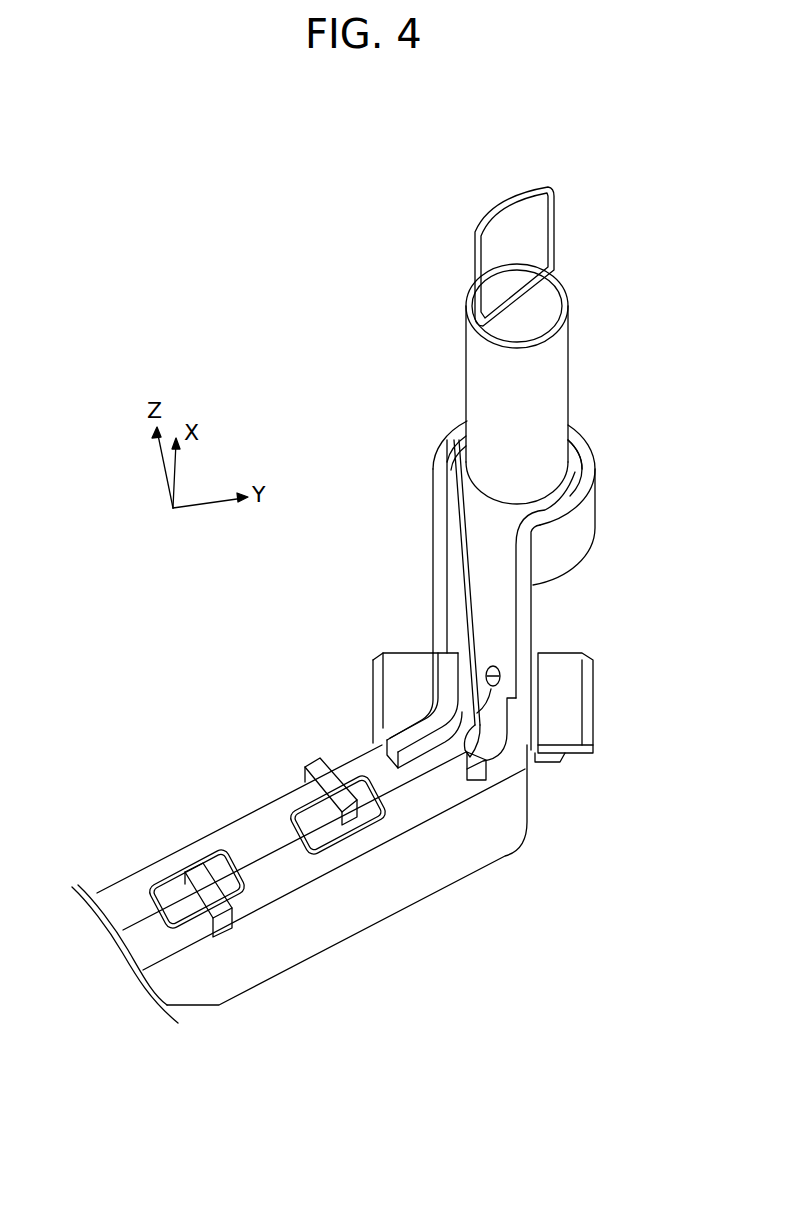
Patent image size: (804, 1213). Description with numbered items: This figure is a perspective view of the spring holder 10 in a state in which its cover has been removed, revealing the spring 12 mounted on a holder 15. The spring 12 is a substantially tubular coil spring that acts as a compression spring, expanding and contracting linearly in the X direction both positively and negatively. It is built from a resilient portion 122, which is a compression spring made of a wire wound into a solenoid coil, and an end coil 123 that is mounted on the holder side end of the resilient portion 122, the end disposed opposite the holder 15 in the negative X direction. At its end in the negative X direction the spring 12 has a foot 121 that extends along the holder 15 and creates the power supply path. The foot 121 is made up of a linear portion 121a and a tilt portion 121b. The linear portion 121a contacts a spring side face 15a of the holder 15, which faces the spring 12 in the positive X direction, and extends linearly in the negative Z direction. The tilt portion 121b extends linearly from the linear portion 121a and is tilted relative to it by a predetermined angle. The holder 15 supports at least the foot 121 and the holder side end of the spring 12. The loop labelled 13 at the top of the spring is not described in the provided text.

The spring holder 10 is at (597, 248).
The spring 12 is at (449, 300).
The loop 13 is at (507, 197).
The holder 15 is at (597, 520).
The spring side face 15a is at (577, 462).
The foot 121 is at (332, 731).
The linear portion 121a is at (460, 583).
The tilt portion 121b is at (263, 850).
The resilient portion 122 is at (572, 365).
The end coil 123 is at (456, 452).